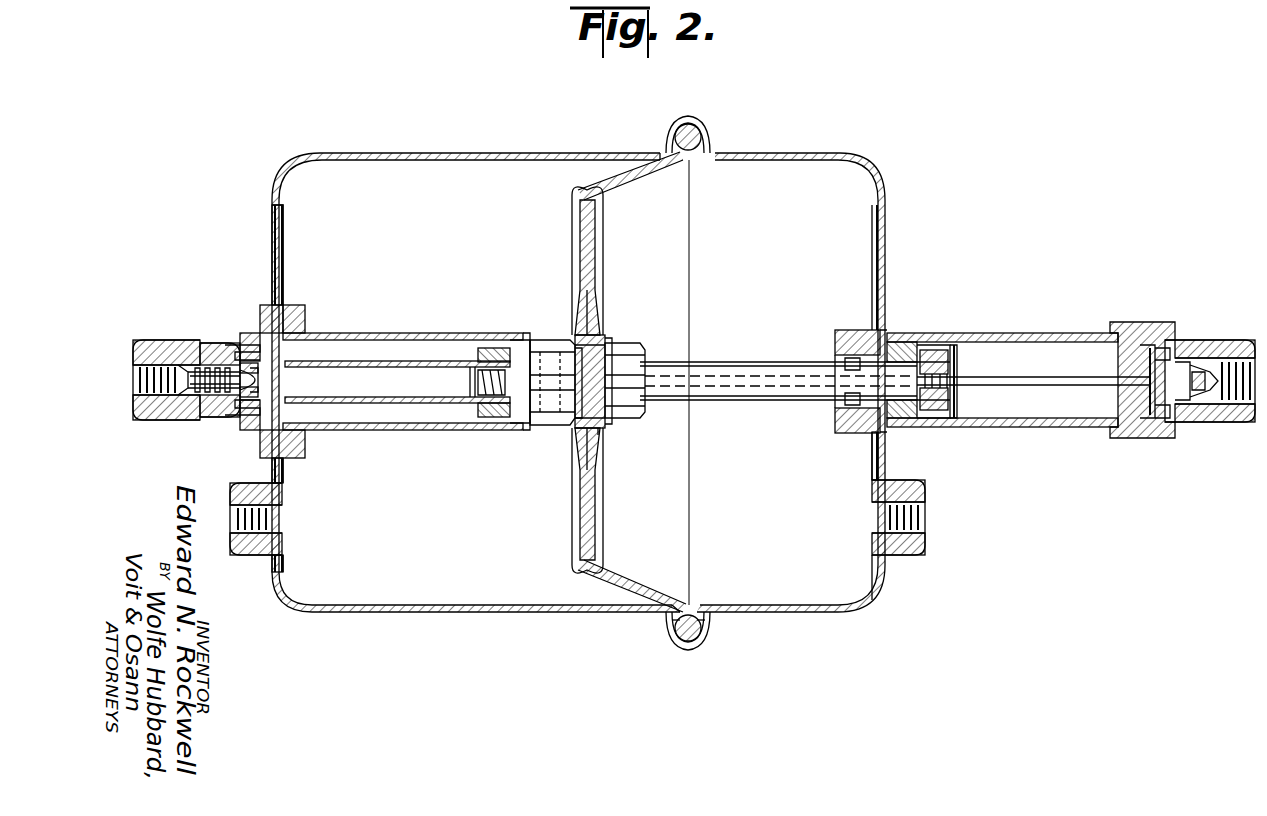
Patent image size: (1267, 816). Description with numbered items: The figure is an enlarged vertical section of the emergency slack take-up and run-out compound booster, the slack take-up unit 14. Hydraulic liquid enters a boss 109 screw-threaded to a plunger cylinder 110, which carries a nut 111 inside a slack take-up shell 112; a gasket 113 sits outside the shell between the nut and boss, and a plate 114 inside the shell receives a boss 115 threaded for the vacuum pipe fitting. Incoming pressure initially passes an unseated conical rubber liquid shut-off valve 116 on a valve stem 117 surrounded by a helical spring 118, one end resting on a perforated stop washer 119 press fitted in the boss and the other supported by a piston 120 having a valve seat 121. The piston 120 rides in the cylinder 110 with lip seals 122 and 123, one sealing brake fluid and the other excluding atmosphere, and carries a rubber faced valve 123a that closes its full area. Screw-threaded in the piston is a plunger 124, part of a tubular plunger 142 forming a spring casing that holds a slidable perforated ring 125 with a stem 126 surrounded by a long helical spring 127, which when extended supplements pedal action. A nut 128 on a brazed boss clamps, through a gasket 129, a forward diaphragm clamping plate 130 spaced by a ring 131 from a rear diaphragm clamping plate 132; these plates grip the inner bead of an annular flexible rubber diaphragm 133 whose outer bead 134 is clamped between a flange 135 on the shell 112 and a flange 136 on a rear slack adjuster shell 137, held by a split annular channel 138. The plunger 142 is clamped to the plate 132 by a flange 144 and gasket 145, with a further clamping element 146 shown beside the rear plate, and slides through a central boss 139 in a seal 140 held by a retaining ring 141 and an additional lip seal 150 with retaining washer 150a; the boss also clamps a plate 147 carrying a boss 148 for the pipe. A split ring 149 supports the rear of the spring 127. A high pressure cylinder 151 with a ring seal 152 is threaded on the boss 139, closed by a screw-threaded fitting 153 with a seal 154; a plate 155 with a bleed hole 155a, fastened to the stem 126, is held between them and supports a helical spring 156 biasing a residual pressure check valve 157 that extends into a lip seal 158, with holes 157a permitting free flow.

The slack take-up unit 14 is at (553, 110).
The boss 109 is at (157, 342).
The plunger cylinder 110 is at (388, 333).
The nut 111 is at (298, 305).
The slack take-up shell 112 is at (406, 153).
The gasket 113 is at (277, 300).
The plate 114 is at (283, 470).
The boss 115 is at (243, 555).
The liquid shut-off valve 116 is at (256, 385).
The valve stem 117 is at (208, 343).
The helical spring 118 is at (195, 420).
The perforated stop washer 119 is at (172, 418).
The piston 120 is at (262, 442).
The valve seat 121 is at (238, 420).
The lip seal 122 is at (248, 345).
The lip seal 123 is at (306, 318).
The rubber faced valve 123a is at (238, 333).
The plunger 124 is at (378, 403).
The slidable perforated ring 125 is at (470, 410).
The stem 126 is at (512, 342).
The long helical spring 127 is at (496, 420).
The nut 128 is at (552, 430).
The gasket 129 is at (570, 440).
The forward diaphragm clamping plate 130 is at (585, 235).
The ring 131 is at (603, 330).
The rear diaphragm clamping plate 132 is at (596, 235).
The annular flexible rubber diaphragm 133 is at (605, 182).
The bead 134 is at (688, 652).
The flange 135 is at (668, 628).
The flange 136 is at (708, 628).
The slack adjuster shell 137 is at (785, 153).
The split annular channel 138 is at (690, 120).
The central boss 139 is at (842, 432).
The seal 140 is at (850, 332).
The retaining ring 141 is at (838, 356).
The plunger 142 is at (722, 370).
The flange 144 is at (614, 428).
The gasket 145 is at (603, 430).
The nut 146 is at (614, 362).
The plate 147 is at (872, 482).
The boss 148 is at (903, 555).
The split ring 149 is at (948, 392).
The lip seal 150 is at (925, 345).
The retaining washer 150a is at (956, 345).
The high pressure cylinder 151 is at (1032, 333).
The ring seal 152 is at (898, 340).
The screw-threaded fitting 153 is at (1170, 325).
The seal 154 is at (1153, 340).
The plate 155 is at (1152, 402).
The hole 155a is at (1152, 355).
The helical spring 156 is at (1178, 425).
The residual pressure check valve 157 is at (1240, 422).
The holes 157a is at (1212, 365).
The lip seal 158 is at (1203, 420).